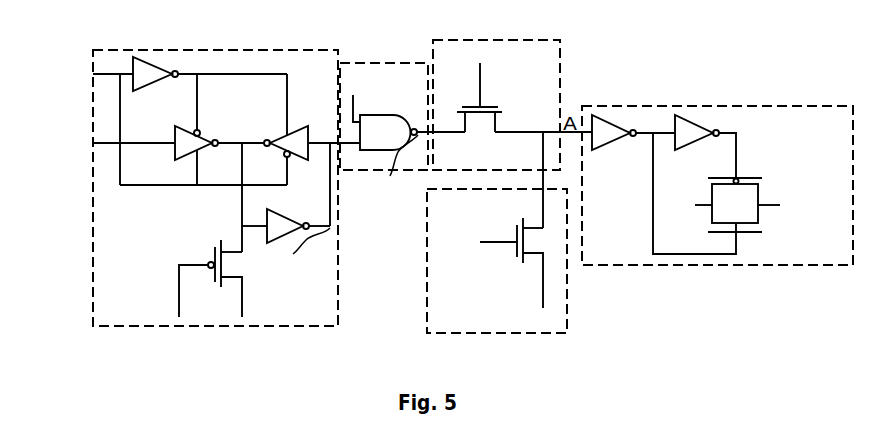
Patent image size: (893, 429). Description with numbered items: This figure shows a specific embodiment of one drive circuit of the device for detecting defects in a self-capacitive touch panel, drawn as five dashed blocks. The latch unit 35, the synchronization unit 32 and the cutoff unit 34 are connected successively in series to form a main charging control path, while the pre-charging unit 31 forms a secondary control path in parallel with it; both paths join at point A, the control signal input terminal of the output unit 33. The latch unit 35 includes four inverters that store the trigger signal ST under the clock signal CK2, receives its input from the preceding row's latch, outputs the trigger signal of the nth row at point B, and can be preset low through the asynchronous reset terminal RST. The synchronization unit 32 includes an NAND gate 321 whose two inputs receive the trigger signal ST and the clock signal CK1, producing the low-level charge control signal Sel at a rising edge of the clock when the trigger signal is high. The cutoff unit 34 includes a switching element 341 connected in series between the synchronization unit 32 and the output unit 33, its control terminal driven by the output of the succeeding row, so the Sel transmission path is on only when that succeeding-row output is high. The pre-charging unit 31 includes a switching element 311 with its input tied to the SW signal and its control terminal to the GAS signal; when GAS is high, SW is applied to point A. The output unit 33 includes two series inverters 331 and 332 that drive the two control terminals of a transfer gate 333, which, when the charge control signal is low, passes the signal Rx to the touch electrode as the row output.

The pre-charging unit 31 is at (532, 261).
The switching element 311 is at (515, 263).
The synchronization unit 32 is at (384, 115).
The NAND gate 321 is at (390, 122).
The output unit 33 is at (718, 165).
The inverter 331 is at (614, 143).
The inverter 332 is at (697, 143).
The transfer gate 333 is at (745, 210).
The cutoff unit 34 is at (530, 105).
The switching element 341 is at (496, 97).
The latch unit 35 is at (338, 284).